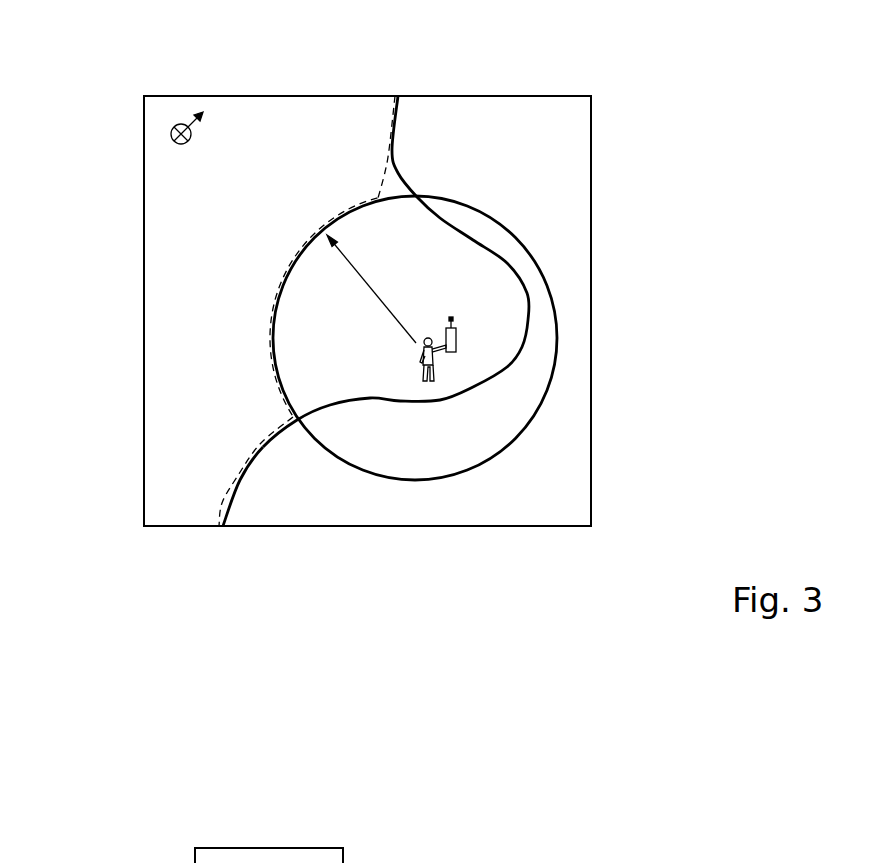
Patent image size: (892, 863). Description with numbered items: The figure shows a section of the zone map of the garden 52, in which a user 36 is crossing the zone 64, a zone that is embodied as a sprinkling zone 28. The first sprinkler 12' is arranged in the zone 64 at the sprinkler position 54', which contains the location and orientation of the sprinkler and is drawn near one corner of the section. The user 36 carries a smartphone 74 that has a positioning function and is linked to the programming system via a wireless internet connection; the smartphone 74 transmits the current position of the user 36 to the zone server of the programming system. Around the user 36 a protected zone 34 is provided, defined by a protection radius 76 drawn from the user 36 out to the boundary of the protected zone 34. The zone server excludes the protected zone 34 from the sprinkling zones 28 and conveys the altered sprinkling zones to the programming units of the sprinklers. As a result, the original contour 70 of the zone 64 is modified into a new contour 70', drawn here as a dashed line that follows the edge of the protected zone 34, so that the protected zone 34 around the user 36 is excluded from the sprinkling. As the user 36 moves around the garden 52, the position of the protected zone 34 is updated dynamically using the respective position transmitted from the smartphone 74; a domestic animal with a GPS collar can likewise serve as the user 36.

The garden 52 is at (516, 96).
The sprinkler position 54' is at (120, 133).
The first sprinkler 12' is at (131, 162).
The new contour 70' is at (332, 225).
The protected zone 34 is at (505, 238).
The protection radius 76 is at (380, 302).
The smartphone 74 is at (457, 340).
The user 36 is at (441, 361).
The contour 70 is at (458, 428).
The sprinkling zone 28 is at (239, 508).
The zone 64 is at (201, 460).